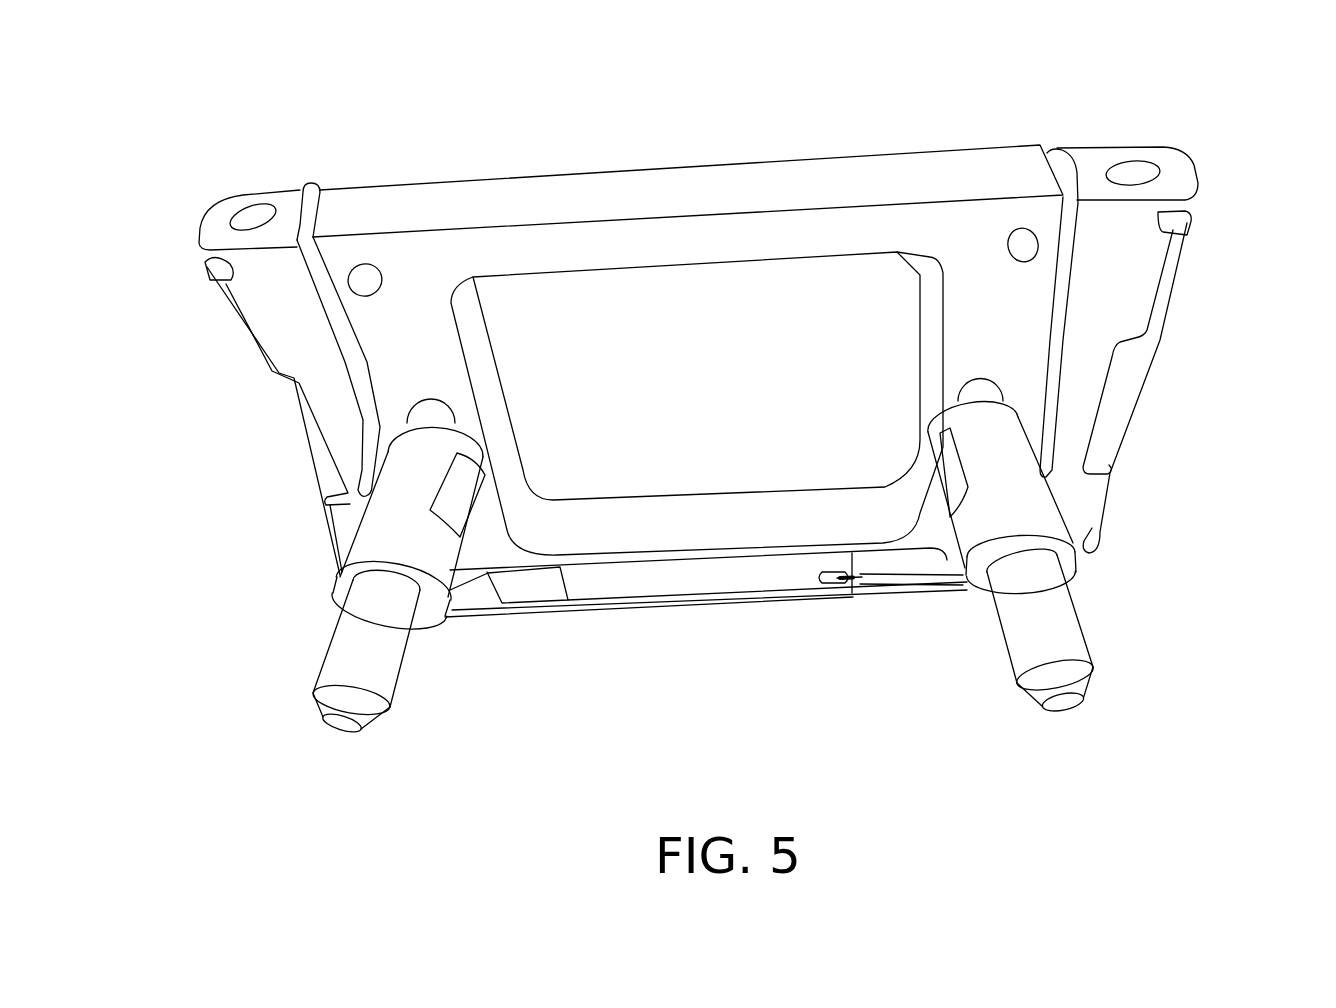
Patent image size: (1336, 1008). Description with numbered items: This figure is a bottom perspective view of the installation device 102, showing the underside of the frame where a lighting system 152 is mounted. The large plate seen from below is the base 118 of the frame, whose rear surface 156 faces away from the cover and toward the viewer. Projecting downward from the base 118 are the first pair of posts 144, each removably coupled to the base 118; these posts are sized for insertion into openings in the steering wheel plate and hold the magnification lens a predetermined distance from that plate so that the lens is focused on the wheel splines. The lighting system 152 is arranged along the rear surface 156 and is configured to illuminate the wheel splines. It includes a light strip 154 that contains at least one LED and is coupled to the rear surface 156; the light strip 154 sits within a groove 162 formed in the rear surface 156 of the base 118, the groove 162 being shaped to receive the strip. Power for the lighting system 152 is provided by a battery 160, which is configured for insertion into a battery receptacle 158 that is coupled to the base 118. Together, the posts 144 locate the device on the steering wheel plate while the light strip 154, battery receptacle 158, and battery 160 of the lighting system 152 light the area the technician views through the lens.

The installation device 102 is at (192, 134).
The base 118 is at (400, 352).
The first pair of posts 144 is at (337, 568).
The lighting system 152 is at (189, 264).
The light strip 154 is at (588, 594).
The rear surface 156 is at (814, 598).
The battery receptacle 158 is at (1177, 183).
The battery 160 is at (1133, 348).
The groove 162 is at (847, 588).